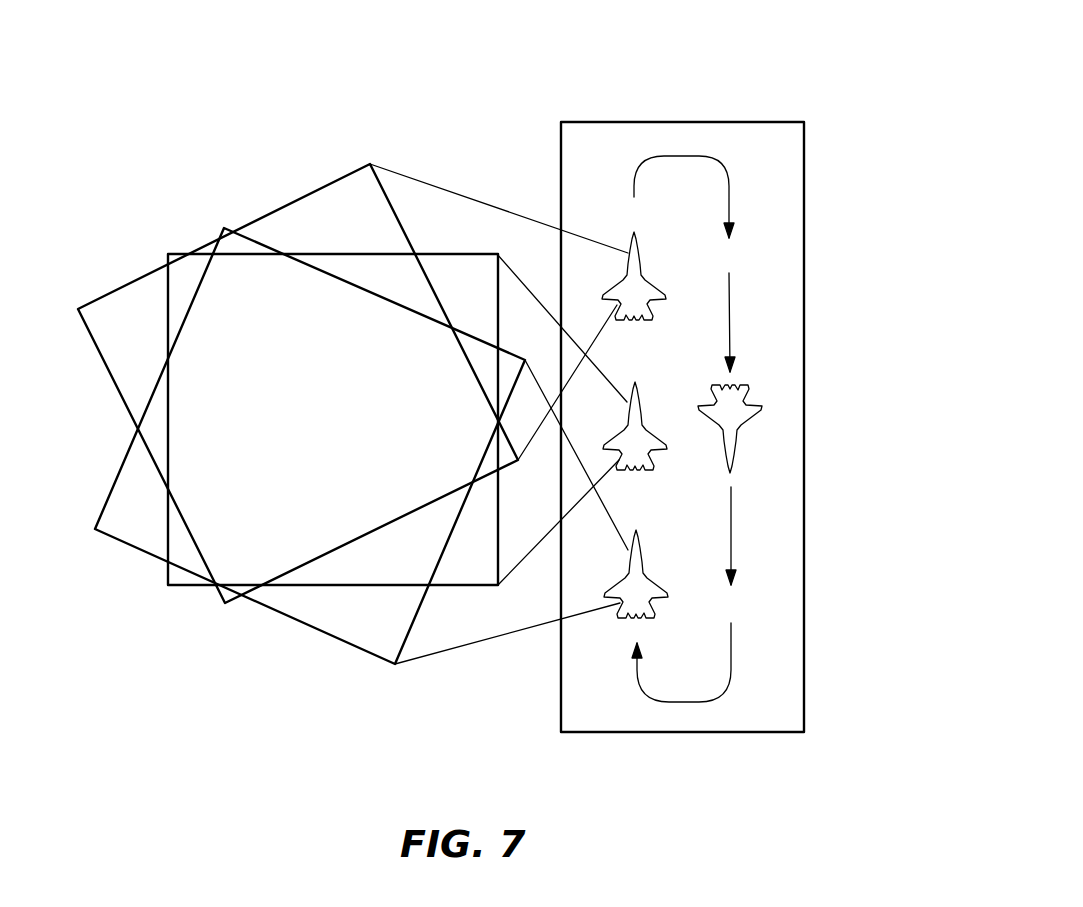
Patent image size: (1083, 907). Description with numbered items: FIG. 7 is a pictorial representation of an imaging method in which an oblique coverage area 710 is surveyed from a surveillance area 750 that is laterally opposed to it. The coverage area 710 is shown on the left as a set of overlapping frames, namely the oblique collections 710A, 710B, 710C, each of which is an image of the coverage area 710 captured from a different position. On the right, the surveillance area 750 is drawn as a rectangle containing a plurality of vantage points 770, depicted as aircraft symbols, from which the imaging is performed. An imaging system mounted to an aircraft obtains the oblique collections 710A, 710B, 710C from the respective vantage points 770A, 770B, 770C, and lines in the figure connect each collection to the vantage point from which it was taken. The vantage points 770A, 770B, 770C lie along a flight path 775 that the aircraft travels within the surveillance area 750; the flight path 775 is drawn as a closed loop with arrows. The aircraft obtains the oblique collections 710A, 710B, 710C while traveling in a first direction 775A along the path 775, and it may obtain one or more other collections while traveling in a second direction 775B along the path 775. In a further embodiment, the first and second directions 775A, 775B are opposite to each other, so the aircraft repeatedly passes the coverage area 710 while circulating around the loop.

The oblique coverage area 710 is at (282, 371).
The oblique collection 710A is at (305, 195).
The oblique collection 710B is at (179, 253).
The oblique collection 710C is at (113, 540).
The surveillance area 750 is at (747, 122).
The vantage points 770 is at (628, 364).
The vantage point 770A is at (673, 280).
The vantage point 770B is at (650, 450).
The vantage point 770C is at (678, 592).
The flight path 775 is at (671, 480).
The first direction 775A is at (620, 636).
The second direction 775B is at (731, 528).